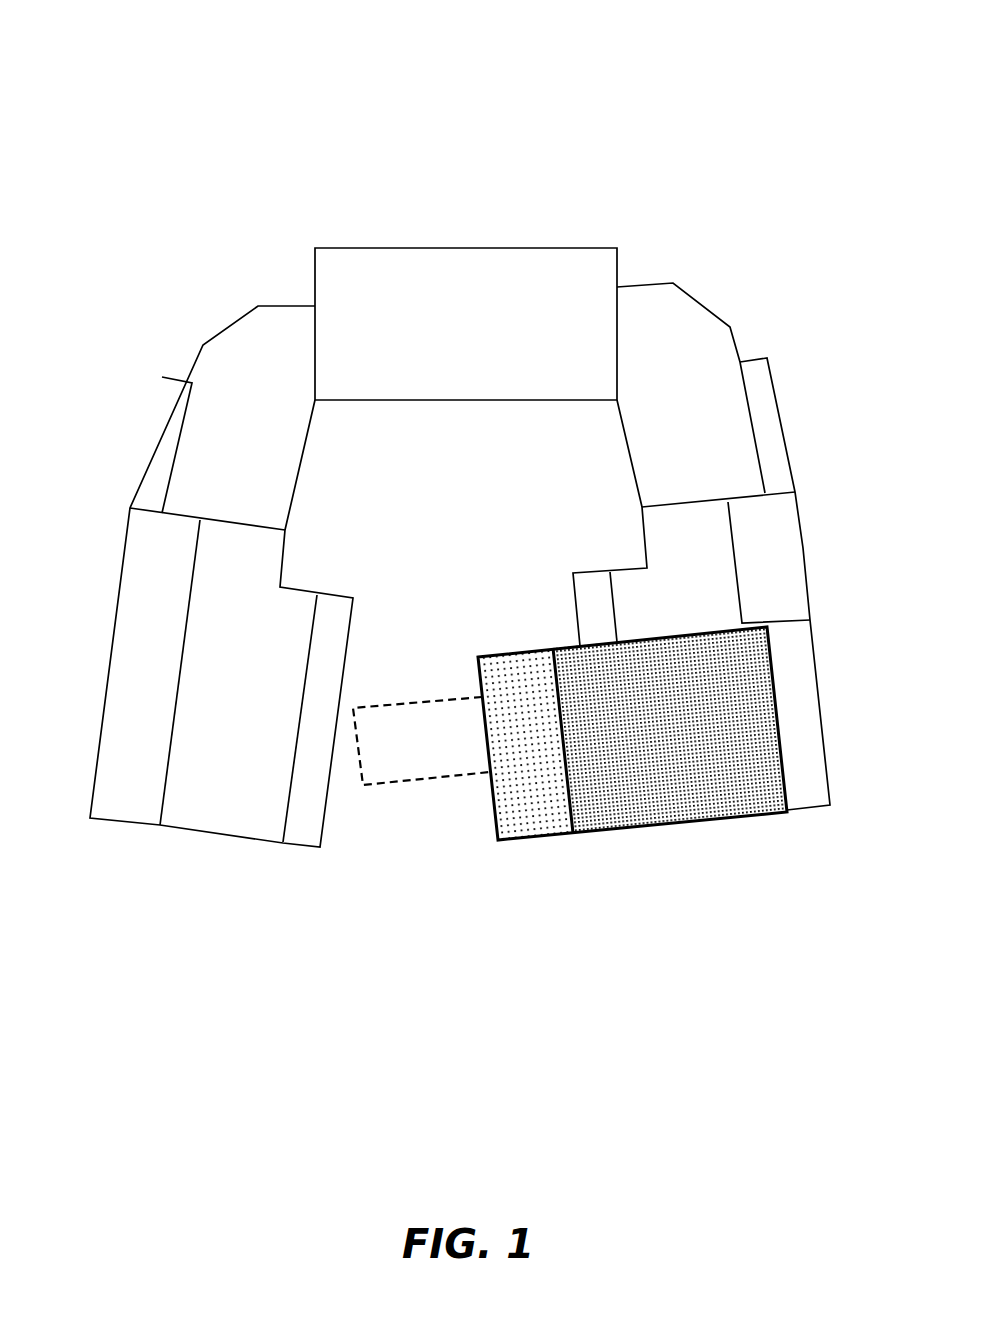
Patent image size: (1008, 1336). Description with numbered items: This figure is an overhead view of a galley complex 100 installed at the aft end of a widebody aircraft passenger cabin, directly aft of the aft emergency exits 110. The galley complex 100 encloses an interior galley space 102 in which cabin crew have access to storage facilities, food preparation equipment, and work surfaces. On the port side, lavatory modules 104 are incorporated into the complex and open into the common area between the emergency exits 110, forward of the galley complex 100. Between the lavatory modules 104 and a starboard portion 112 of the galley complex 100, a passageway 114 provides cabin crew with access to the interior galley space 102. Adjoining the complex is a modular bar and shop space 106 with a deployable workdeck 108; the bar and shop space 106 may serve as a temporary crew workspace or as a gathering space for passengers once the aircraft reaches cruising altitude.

The galley complex 100 is at (145, 90).
The interior galley space 102 is at (478, 485).
The lavatory modules 104 is at (708, 772).
The modular bar and shop space 106 is at (528, 805).
The deployable workdeck 108 is at (428, 748).
The aft emergency exits 110 is at (103, 902).
The starboard portion 112 is at (228, 805).
The passageway 114 is at (405, 688).